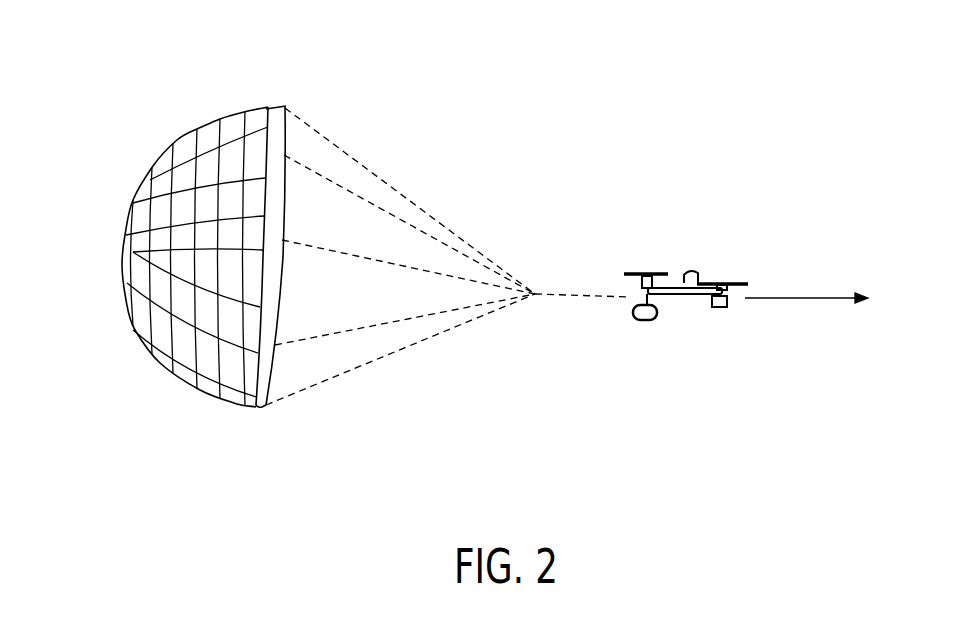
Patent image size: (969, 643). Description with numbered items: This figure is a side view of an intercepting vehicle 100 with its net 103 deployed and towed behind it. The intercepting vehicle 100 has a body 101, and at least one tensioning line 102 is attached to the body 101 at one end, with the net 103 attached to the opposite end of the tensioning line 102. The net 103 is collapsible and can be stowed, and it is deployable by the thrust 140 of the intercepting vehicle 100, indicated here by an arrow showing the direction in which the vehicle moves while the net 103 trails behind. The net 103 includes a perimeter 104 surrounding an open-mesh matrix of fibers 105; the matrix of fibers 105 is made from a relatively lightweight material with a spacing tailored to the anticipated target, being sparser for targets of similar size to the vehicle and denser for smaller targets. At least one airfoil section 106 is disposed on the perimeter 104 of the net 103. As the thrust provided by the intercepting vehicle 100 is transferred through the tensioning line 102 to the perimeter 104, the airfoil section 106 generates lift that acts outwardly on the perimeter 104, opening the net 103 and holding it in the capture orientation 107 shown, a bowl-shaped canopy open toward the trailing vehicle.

The intercepting vehicle 100 is at (721, 278).
The body 101 is at (682, 298).
The tensioning line 102 is at (400, 196).
The net 103 is at (172, 147).
The perimeter 104 is at (276, 106).
The open-mesh matrix of fibers 105 is at (130, 255).
The airfoil section 106 is at (270, 380).
The capture orientation 107 is at (172, 373).
The thrust 140 is at (790, 300).